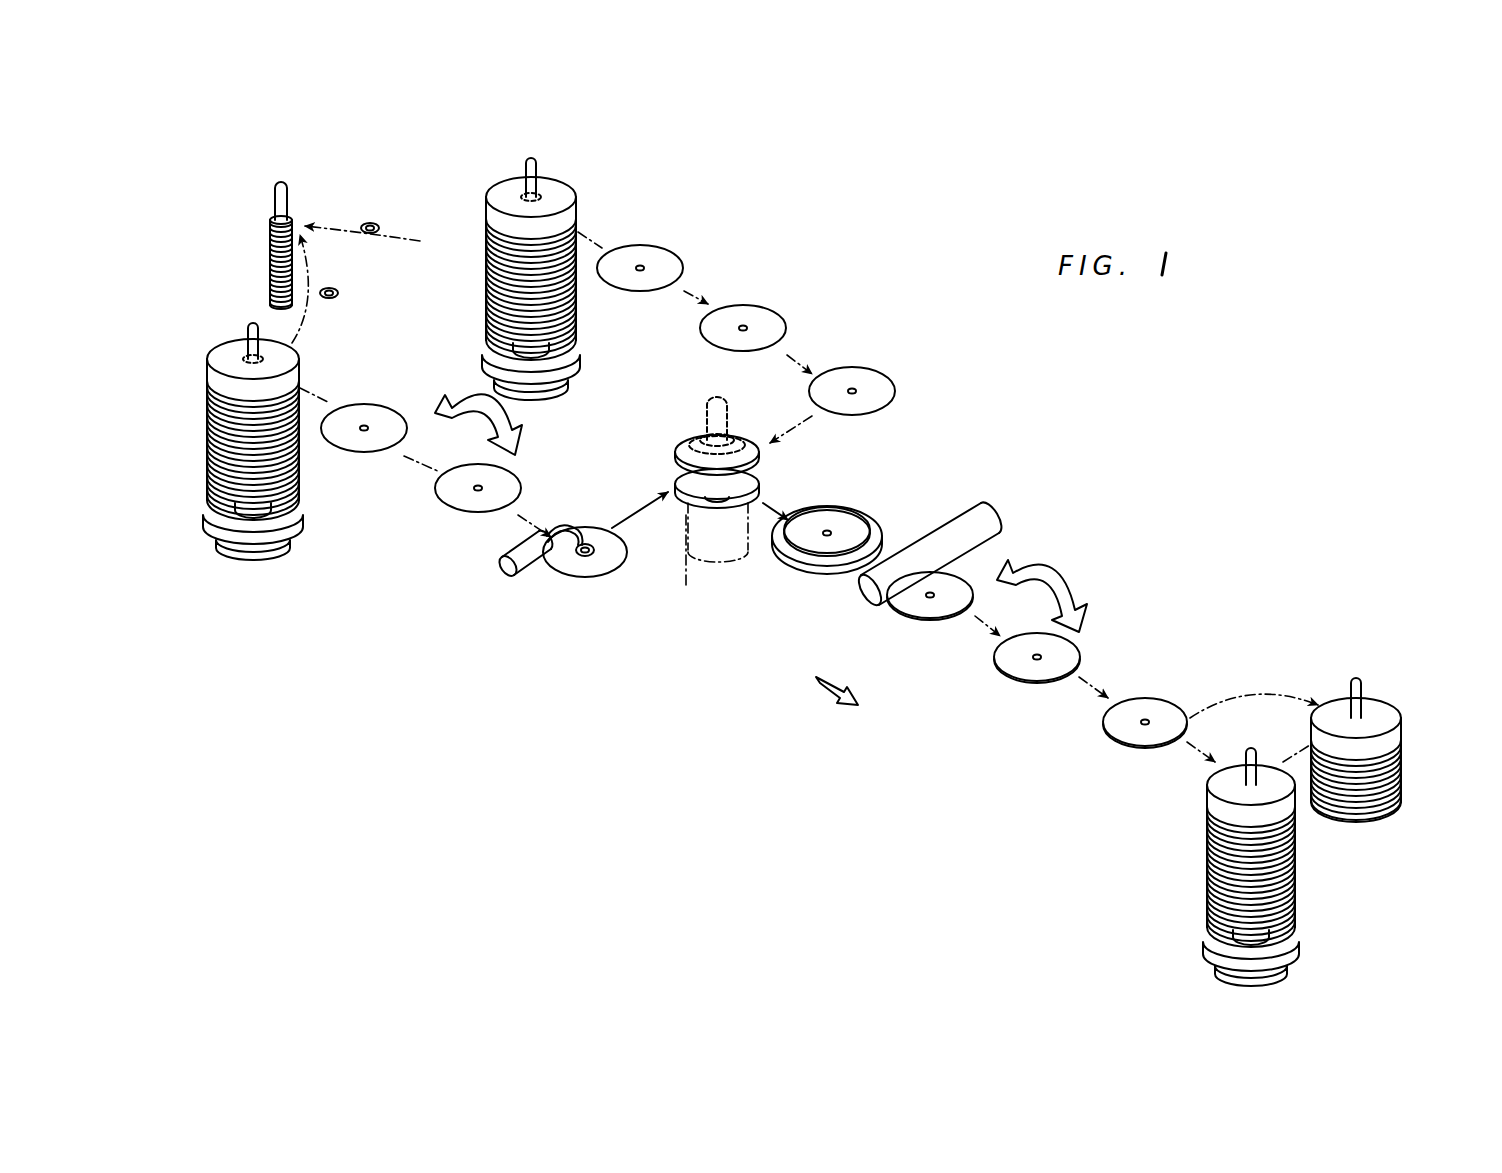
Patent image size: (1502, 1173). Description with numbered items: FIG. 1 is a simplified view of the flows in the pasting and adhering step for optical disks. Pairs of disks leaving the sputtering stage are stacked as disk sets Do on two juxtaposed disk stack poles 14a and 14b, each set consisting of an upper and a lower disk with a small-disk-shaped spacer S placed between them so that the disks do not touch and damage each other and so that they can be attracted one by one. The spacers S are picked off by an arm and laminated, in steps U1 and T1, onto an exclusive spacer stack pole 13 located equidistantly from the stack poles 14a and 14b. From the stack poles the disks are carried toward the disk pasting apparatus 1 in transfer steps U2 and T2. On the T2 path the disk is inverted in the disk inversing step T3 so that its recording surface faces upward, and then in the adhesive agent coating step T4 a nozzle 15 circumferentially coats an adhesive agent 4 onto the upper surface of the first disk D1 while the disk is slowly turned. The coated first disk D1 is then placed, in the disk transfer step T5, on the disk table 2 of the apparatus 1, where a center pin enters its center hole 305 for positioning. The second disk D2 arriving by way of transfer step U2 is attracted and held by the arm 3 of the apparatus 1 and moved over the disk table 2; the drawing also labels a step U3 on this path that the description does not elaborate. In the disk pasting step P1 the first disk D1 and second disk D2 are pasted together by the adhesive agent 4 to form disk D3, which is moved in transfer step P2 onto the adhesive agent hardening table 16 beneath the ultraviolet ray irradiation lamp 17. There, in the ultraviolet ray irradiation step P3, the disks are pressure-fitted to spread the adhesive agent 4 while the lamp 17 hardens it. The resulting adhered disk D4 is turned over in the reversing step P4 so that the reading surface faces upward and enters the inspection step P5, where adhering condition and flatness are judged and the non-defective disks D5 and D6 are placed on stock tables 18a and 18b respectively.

The disk pasting apparatus 1 is at (672, 500).
The disk table 2 is at (710, 559).
The arm 3 is at (722, 423).
The adhesive agent 4 is at (588, 558).
The spacer stack pole 13 is at (276, 195).
The disk stack pole 14a is at (240, 339).
The disk stack pole 14b is at (535, 188).
The nozzle 15 is at (522, 546).
The adhesive agent hardening table 16 is at (810, 567).
The ultraviolet ray irradiation lamp 17 is at (990, 512).
The stock table 18a is at (1262, 798).
The stock table 18b is at (1370, 720).
The center hole 305 is at (645, 268).
The disk Do is at (230, 418).
The first disk D1 is at (363, 410).
The second disk D2 is at (650, 255).
The disk D3 is at (795, 540).
The disk D4 is at (1130, 723).
The non-defective disk D5 is at (1210, 818).
The non-defective disk D6 is at (1378, 712).
The spacer S is at (329, 287).
The spacer lamination step T1 is at (290, 333).
The transfer step T2 is at (520, 523).
The disk inversing step T3 is at (530, 411).
The adhesive agent coating step T4 is at (548, 573).
The disk transfer step T5 is at (650, 523).
The spacer lamination step U1 is at (427, 240).
The transfer step U2 is at (798, 368).
The unloading step 3 U3 is at (818, 380).
The disk pasting step P1 is at (772, 467).
The transfer step P2 is at (792, 490).
The ultraviolet ray irradiation step P3 is at (890, 615).
The reversing step P4 is at (1058, 566).
The inspection step P5 is at (1220, 718).